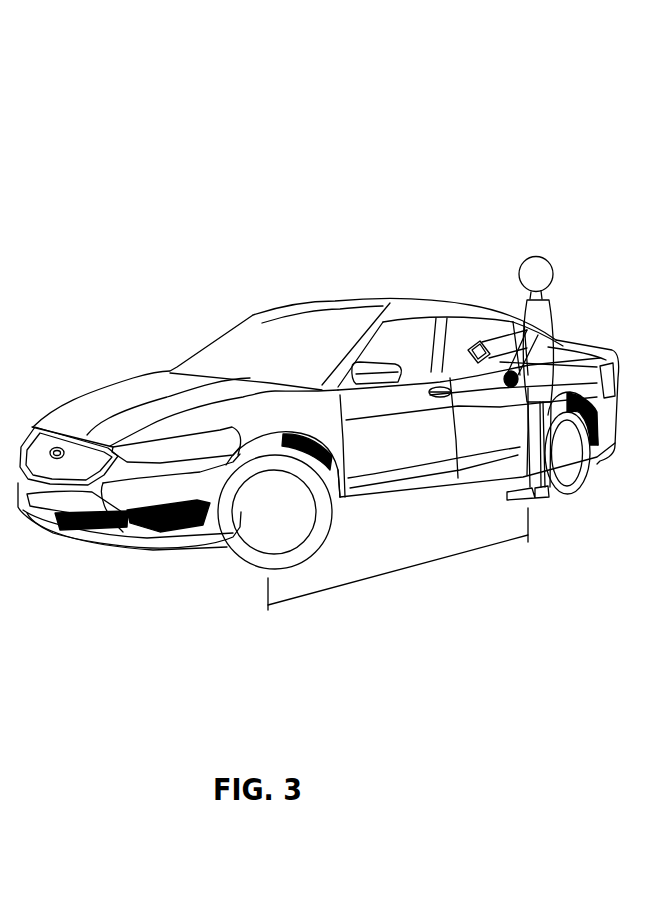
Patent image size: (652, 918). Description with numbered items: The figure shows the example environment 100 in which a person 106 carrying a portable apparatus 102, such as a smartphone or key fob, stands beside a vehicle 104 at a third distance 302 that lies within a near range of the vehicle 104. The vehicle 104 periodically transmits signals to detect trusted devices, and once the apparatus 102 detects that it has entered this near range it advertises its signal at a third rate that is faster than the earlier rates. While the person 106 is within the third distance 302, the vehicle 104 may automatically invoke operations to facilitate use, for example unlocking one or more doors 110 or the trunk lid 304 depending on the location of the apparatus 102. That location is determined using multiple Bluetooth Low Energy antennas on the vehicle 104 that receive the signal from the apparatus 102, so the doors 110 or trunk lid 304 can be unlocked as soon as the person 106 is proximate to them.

The environment 100 is at (136, 95).
The apparatus 102 is at (477, 340).
The vehicle 104 is at (105, 480).
The person 106 is at (542, 257).
The doors 110 is at (468, 383).
The third distance 302 is at (392, 571).
The trunk lid 304 is at (578, 337).